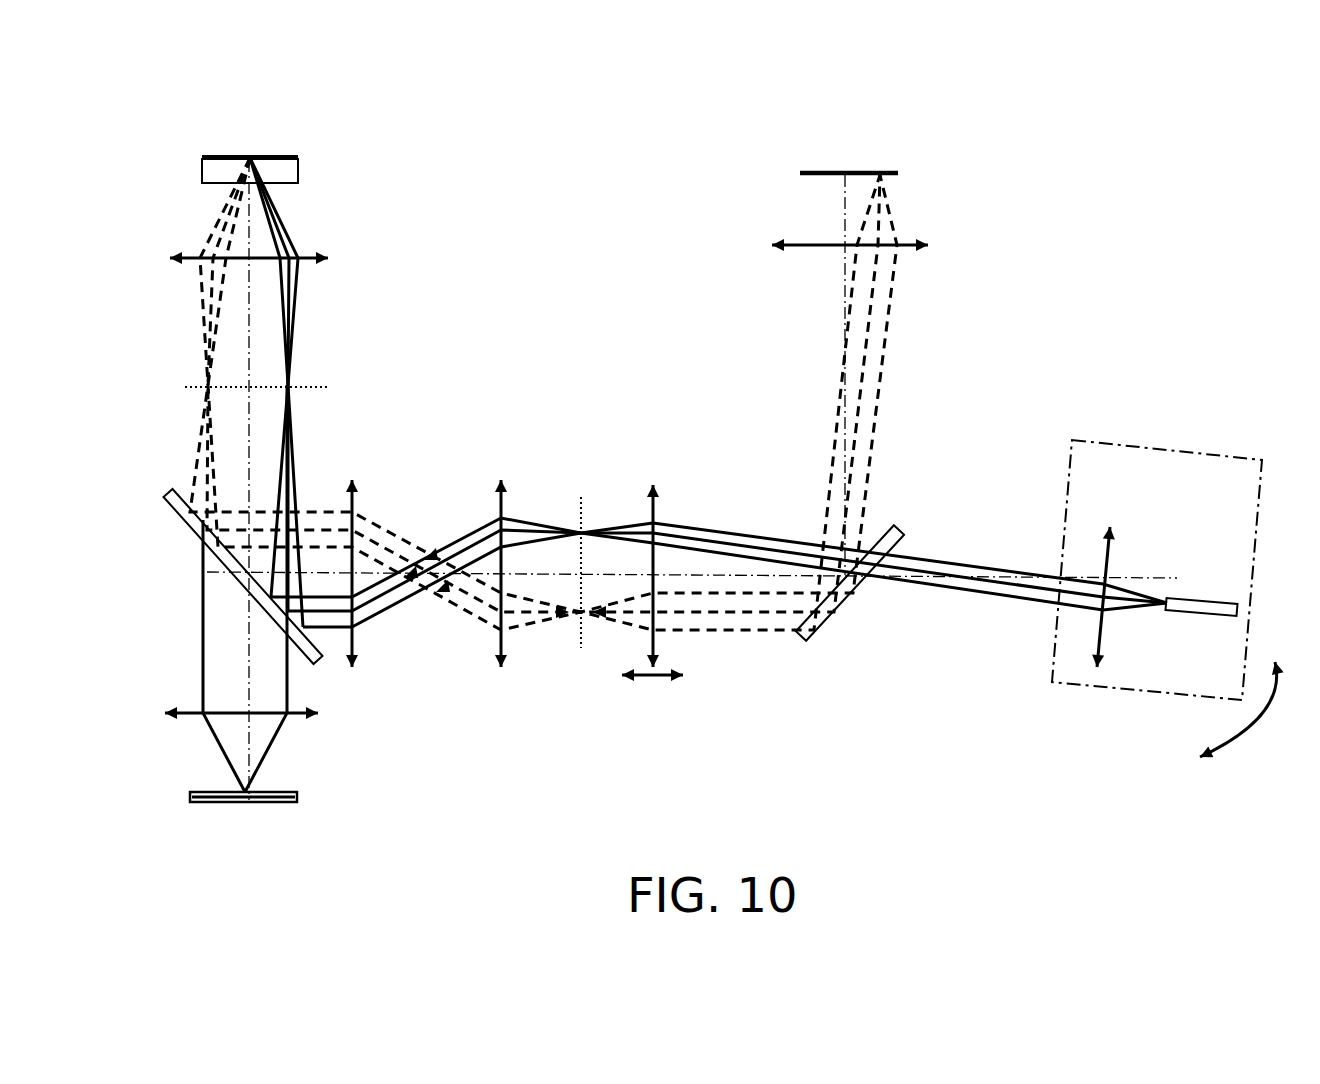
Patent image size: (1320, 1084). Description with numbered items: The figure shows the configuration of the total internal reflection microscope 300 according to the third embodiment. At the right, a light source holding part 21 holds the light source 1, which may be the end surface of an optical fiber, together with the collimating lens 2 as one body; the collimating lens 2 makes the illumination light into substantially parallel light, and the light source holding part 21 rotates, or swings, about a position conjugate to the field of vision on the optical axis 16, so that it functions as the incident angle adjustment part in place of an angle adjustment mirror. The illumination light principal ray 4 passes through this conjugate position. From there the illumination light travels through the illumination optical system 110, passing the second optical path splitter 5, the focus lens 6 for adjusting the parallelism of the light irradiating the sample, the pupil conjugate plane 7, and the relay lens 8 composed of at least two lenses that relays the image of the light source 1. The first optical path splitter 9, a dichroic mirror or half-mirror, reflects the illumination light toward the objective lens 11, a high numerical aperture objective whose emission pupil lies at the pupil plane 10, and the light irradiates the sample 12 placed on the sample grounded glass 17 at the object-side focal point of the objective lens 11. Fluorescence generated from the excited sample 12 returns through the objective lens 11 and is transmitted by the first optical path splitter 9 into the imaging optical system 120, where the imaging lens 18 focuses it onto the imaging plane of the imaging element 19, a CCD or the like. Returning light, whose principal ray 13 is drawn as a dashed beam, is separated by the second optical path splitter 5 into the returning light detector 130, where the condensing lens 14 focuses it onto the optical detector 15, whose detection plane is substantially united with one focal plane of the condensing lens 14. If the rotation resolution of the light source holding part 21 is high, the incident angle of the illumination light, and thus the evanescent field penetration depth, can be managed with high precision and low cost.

The light source 1 is at (1200, 600).
The collimating lens 2 is at (1108, 527).
The illumination light principal ray 4 is at (720, 540).
The second optical path splitter 5 is at (900, 532).
The focus lens 6 is at (653, 485).
The pupil conjugate plane 7 is at (581, 497).
The relay lens 8 is at (510, 672).
The first optical path splitter 9 is at (205, 573).
The pupil plane 10 is at (322, 387).
The objective lens 11 is at (328, 258).
The sample 12 is at (300, 158).
The principal ray of the returning light 13 is at (203, 302).
The condensing lens 14 is at (775, 243).
The optical detector 15 is at (830, 172).
The optical axis 16 is at (250, 433).
The sample grounded glass 17 is at (201, 172).
The imaging lens 18 is at (318, 713).
The imaging element 19 is at (190, 797).
The light source holding part 21 is at (1140, 445).
The illumination optical system 110 is at (614, 405).
The imaging optical system 120 is at (386, 311).
The returning light detector 130 is at (745, 157).
The total internal reflection microscope 300 is at (950, 162).